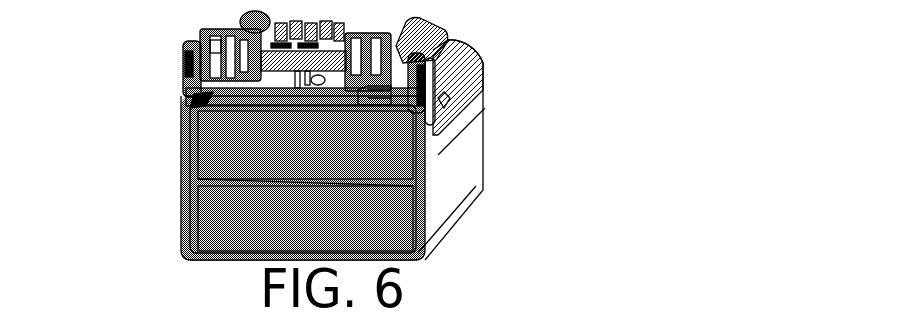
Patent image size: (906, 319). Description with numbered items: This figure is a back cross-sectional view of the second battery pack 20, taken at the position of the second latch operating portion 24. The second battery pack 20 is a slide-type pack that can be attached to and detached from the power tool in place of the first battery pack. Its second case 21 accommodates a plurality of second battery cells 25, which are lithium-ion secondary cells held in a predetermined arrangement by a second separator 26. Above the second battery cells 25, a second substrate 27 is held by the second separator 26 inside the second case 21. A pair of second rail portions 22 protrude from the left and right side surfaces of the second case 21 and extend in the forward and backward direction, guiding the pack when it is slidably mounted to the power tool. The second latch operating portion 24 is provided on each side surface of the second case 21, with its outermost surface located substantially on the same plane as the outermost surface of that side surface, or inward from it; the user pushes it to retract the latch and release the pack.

The second battery pack 20 is at (408, 142).
The second case 21 is at (460, 148).
The second rail portion 22 is at (250, 10).
The second latch operating portion 24 is at (178, 68).
The second battery cell 25 is at (207, 200).
The second separator 26 is at (242, 100).
The second substrate 27 is at (250, 81).